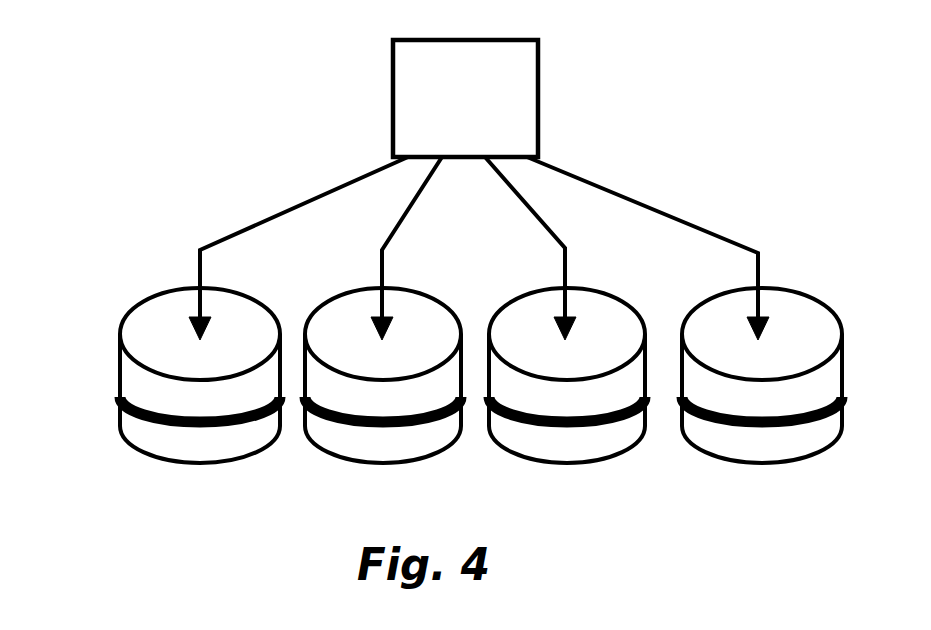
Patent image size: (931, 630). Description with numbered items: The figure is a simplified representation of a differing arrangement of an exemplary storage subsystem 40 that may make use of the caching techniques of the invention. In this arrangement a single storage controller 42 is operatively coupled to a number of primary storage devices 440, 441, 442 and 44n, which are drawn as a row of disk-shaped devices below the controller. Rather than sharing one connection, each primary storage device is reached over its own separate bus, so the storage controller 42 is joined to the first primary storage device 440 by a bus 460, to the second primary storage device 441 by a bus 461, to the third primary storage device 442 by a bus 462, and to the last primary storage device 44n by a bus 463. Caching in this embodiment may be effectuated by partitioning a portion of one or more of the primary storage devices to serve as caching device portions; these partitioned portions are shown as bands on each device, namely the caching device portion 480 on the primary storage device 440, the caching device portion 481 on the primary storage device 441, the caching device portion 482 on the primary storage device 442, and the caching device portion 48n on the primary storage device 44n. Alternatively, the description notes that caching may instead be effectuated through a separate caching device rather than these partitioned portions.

The storage subsystem 40 is at (152, 160).
The storage controller 42 is at (392, 97).
The bus 460 is at (305, 200).
The bus 461 is at (399, 225).
The bus 462 is at (566, 248).
The bus 463 is at (625, 198).
The primary storage device 440 is at (153, 442).
The primary storage device 441 is at (372, 445).
The primary storage device 442 is at (567, 452).
The primary storage device 44n is at (787, 452).
The caching device portion 480 is at (128, 403).
The caching device portion 481 is at (313, 413).
The caching device portion 482 is at (503, 413).
The caching device portion 48n is at (697, 415).